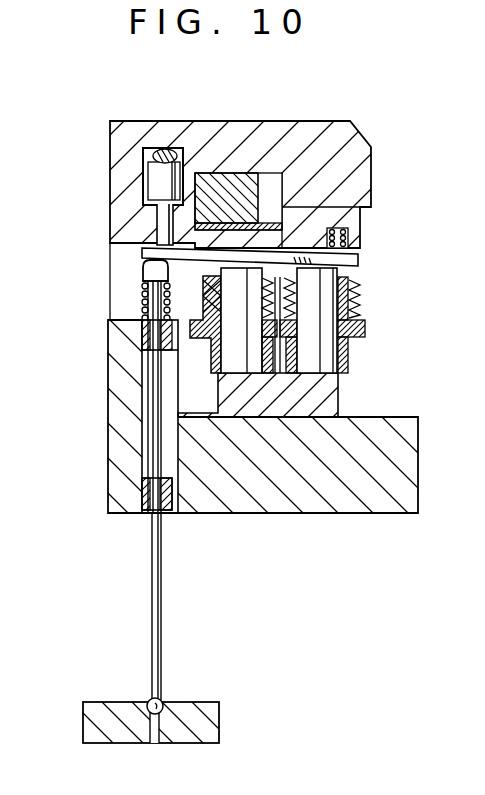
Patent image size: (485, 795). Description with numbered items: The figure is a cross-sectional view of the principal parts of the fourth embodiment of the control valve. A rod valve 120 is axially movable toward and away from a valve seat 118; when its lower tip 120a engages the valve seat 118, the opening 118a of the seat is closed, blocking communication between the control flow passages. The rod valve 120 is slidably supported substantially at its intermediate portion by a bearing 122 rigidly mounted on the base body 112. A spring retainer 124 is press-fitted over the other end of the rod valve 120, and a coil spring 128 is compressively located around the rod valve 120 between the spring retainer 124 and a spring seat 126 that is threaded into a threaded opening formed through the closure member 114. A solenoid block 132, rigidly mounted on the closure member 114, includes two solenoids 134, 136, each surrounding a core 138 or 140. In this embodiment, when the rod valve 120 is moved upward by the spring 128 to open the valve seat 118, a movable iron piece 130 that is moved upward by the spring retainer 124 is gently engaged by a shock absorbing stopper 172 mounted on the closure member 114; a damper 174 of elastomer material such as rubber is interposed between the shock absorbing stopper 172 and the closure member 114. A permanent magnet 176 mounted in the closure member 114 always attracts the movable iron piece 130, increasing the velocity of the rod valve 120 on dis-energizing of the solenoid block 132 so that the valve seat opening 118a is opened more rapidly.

The base body 112 is at (297, 512).
The closure member 114 is at (358, 147).
The valve seat 118 is at (215, 722).
The opening of the valve seat 118a is at (156, 745).
The rod valve 120 is at (150, 598).
The lower tip of the rod valve 120a is at (161, 700).
The bearing 122 is at (142, 495).
The spring retainer 124 is at (155, 267).
The spring seat 126 is at (148, 340).
The coil spring 128 is at (143, 300).
The movable iron piece 130 is at (360, 262).
The solenoid block 132 is at (342, 400).
The solenoid 134 is at (203, 302).
The solenoid 136 is at (355, 300).
The core 138 is at (224, 345).
The core 140 is at (318, 352).
The shock absorbing stopper 172 is at (150, 180).
The damper 174 is at (163, 150).
The permanent magnet 176 is at (229, 172).